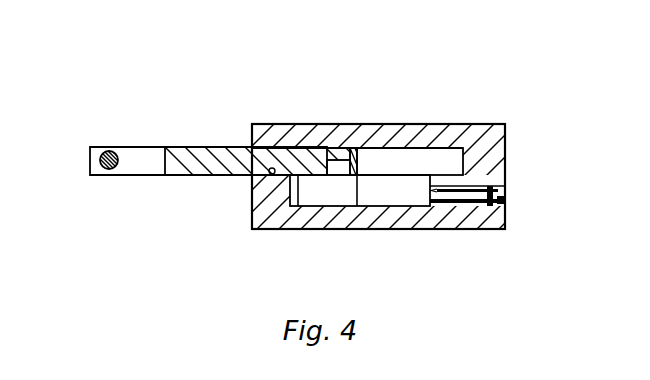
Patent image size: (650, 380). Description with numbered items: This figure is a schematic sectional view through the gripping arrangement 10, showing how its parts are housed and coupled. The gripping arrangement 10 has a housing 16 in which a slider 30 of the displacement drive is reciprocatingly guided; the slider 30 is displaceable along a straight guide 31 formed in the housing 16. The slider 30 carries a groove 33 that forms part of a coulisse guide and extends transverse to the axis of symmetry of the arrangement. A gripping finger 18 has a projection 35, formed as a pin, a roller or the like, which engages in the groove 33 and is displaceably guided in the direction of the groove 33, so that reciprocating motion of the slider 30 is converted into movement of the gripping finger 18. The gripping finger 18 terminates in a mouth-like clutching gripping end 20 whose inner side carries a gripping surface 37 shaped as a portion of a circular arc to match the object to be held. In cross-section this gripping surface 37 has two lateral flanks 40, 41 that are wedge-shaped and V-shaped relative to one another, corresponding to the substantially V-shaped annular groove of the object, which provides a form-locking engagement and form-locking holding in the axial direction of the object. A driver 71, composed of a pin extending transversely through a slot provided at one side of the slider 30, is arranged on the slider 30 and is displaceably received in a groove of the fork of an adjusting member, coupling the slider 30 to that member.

The gripping arrangement 10 is at (402, 122).
The housing 16 is at (432, 136).
The gripping finger 18 is at (402, 192).
The gripping end 20 is at (507, 198).
The slider 30 is at (203, 170).
The straight guide 31 is at (271, 176).
The groove 33 is at (334, 107).
The projection 35 is at (353, 158).
The gripping surface 37 is at (491, 195).
The lateral flank 40 is at (463, 200).
The lateral flank 41 is at (490, 188).
The driver 71 is at (105, 170).